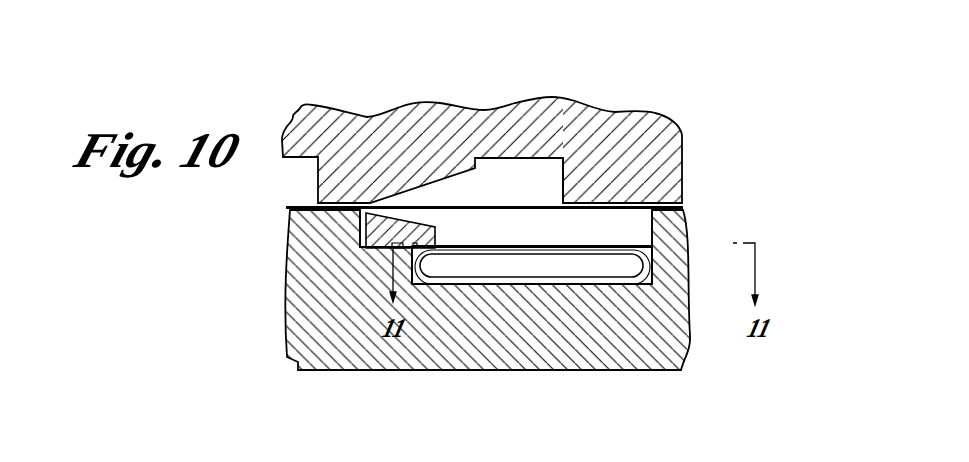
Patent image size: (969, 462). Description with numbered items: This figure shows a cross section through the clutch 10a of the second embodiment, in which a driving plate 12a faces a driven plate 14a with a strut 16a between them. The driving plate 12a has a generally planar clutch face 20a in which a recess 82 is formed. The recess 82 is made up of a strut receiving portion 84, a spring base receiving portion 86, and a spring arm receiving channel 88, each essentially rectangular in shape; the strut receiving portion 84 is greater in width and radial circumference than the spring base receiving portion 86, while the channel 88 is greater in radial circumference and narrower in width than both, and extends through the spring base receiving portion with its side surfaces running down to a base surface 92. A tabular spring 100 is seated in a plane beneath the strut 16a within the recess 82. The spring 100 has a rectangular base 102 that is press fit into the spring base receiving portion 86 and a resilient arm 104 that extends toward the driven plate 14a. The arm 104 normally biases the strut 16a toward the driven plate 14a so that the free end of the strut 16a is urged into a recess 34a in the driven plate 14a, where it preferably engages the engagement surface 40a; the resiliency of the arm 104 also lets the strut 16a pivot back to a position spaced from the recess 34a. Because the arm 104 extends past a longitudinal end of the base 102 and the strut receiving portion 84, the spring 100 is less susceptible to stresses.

The clutch 10a is at (532, 209).
The driving plate 12a is at (688, 350).
The driven plate 14a is at (683, 127).
The strut 16a is at (436, 205).
The clutch face 20a is at (328, 203).
The recess 34a is at (537, 165).
The engagement surface 40a is at (565, 183).
The recess 82 is at (646, 244).
The strut receiving portion 84 is at (365, 221).
The spring base receiving portion 86 is at (454, 238).
The spring arm receiving channel 88 is at (644, 282).
The base surface 92 is at (607, 279).
The tabular spring 100 is at (508, 255).
The base 102 is at (392, 248).
The arm 104 is at (620, 246).